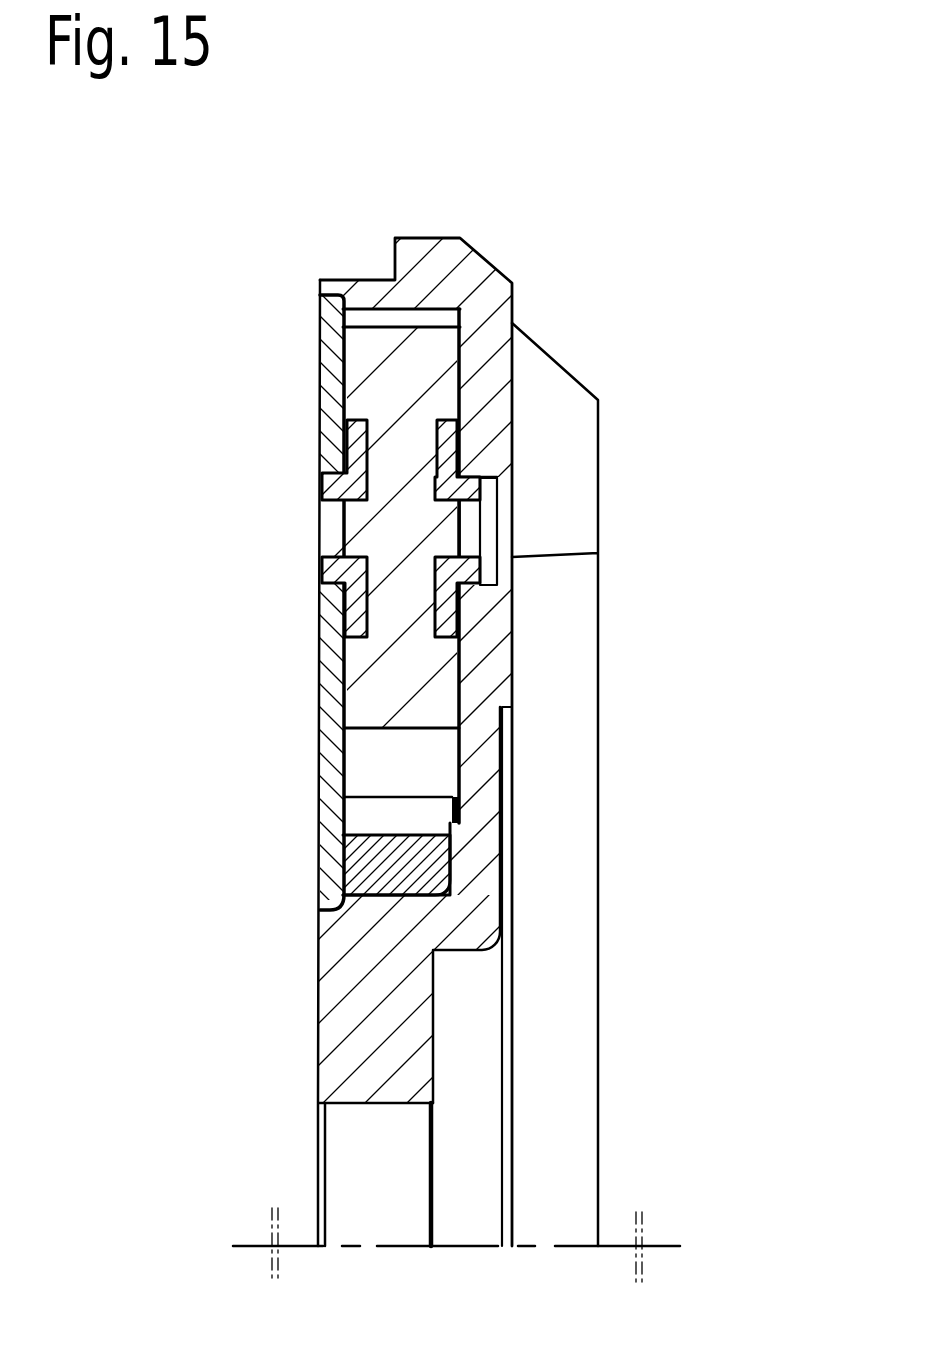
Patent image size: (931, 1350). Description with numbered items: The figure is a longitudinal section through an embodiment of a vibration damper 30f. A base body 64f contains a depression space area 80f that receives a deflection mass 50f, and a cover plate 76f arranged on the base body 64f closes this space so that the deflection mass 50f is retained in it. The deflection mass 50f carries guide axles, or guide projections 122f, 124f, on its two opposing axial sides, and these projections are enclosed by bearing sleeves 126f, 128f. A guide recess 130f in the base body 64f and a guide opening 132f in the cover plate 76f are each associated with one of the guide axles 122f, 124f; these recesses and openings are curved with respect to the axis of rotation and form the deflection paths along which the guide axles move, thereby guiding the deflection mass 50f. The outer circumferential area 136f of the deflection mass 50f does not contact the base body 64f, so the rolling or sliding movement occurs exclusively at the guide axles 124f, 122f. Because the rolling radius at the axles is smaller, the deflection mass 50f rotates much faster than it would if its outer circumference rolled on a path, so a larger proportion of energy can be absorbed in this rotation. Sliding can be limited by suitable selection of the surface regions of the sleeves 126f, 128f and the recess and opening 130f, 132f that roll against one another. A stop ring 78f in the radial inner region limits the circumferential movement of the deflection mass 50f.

The vibration damper 30f is at (572, 183).
The base body 64f is at (508, 312).
The outer circumferential area 136f is at (386, 320).
The cover plate 76f is at (320, 631).
The deflection mass 50f is at (434, 709).
The depression space area 80f is at (436, 781).
The stop ring 78f is at (355, 850).
The bearing sleeve 128f is at (337, 485).
The guide projection 124f is at (320, 517).
The guide opening 132f is at (330, 596).
The guide recess 130f is at (490, 568).
The guide projection 122f is at (497, 527).
The bearing sleeve 126f is at (467, 543).